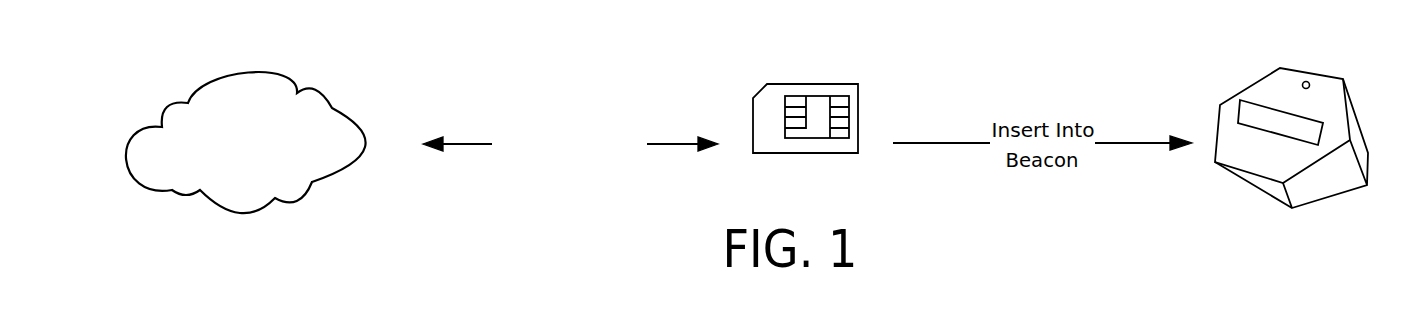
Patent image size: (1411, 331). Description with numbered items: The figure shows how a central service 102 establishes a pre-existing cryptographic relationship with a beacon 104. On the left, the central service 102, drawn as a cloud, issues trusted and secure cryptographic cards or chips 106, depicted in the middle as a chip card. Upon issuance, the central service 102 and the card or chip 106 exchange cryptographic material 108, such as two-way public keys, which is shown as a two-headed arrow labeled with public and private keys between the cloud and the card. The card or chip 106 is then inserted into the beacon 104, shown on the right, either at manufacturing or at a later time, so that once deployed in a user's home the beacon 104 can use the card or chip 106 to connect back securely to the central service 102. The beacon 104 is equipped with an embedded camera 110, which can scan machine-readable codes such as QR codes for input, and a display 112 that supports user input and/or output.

The central service 102 is at (188, 103).
The beacon 104 is at (1284, 104).
The cryptographic cards or chips 106 is at (841, 84).
The cryptographic material 108 is at (542, 105).
The embedded camera 110 is at (1298, 82).
The display 112 is at (1267, 143).